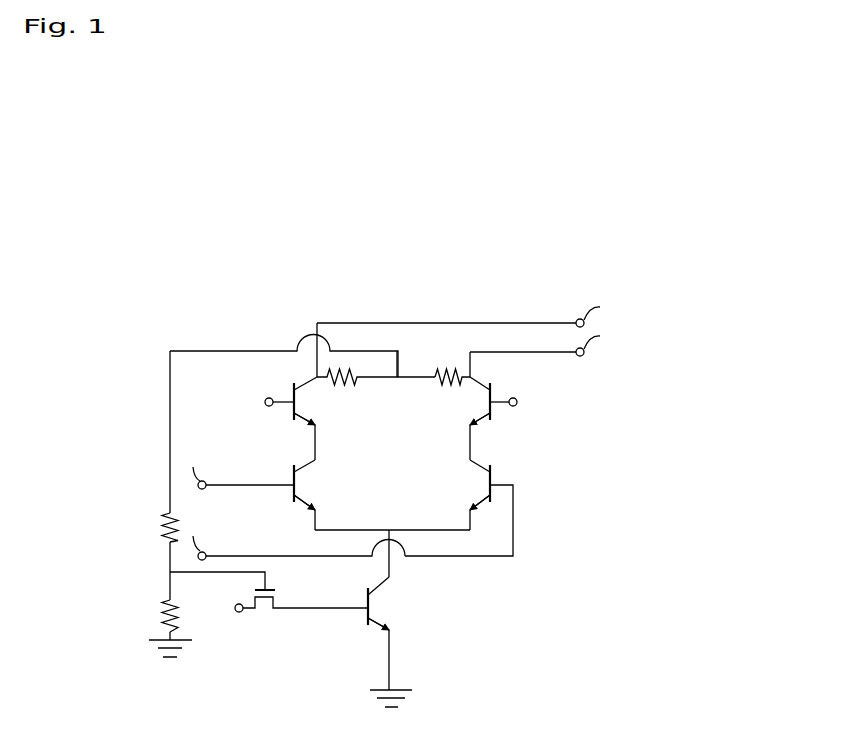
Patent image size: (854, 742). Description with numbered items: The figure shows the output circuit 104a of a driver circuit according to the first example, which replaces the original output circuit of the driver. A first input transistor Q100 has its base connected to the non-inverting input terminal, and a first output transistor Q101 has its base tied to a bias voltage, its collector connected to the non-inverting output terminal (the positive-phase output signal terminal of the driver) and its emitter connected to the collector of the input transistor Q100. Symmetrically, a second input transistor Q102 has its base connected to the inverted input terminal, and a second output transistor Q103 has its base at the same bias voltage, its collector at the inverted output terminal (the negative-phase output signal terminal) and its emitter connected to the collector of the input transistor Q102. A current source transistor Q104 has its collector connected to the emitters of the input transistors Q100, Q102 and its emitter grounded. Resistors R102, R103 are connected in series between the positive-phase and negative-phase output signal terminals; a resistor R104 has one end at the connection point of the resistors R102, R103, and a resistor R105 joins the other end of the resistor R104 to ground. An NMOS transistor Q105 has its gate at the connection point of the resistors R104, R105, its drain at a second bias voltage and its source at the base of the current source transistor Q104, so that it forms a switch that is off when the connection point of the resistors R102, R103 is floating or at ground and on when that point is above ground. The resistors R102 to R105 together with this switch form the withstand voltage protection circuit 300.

The withstand voltage protection circuit 300 is at (203, 683).
The output circuit 104a is at (417, 261).
The resistor R102 is at (348, 370).
The resistor R103 is at (447, 365).
The resistor R104 is at (143, 527).
The resistor R105 is at (150, 628).
The input transistor Q100 is at (271, 486).
The output transistor Q101 is at (292, 418).
The input transistor Q102 is at (459, 508).
The output transistor Q103 is at (487, 418).
The current source transistor Q104 is at (402, 642).
The NMOS transistor Q105 is at (282, 628).